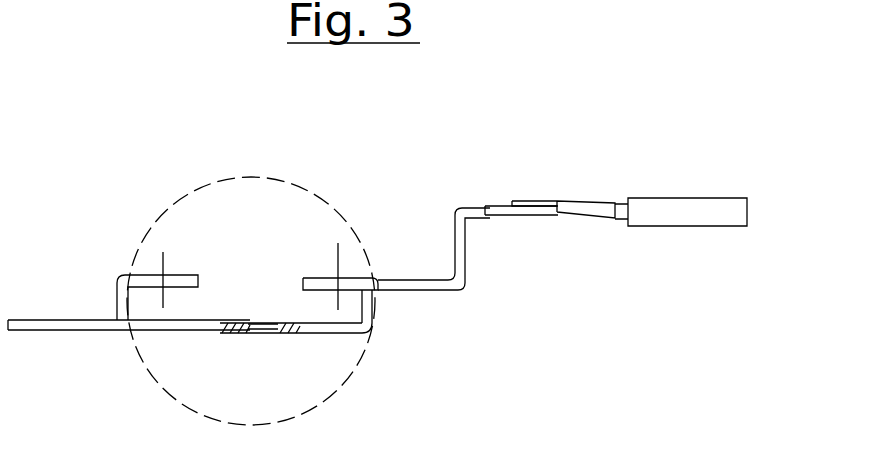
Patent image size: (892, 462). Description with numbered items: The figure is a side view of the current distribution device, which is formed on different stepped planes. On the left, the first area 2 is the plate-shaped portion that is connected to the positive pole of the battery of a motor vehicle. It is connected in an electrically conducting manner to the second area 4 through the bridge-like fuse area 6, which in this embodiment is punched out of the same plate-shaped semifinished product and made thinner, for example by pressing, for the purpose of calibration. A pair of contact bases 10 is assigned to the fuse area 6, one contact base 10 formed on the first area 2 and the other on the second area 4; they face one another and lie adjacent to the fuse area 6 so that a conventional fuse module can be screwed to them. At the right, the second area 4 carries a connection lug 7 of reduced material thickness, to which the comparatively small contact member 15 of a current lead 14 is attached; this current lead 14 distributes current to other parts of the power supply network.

The first area 2 is at (55, 325).
The second area 4 is at (437, 293).
The bridge-like fuse area 6 is at (265, 328).
The connection lug 7 is at (528, 214).
The contact base 10 is at (187, 275).
The current lead 14 is at (708, 213).
The contact member 15 is at (593, 208).